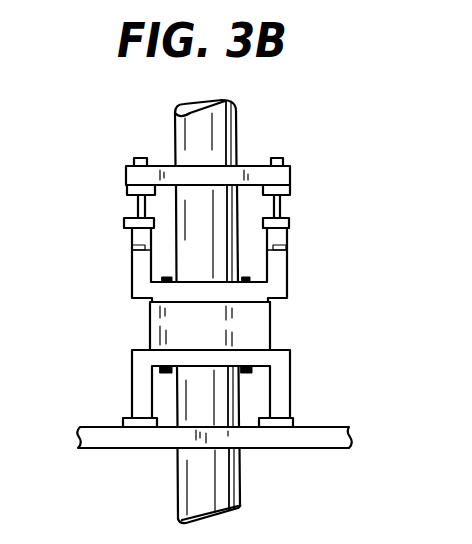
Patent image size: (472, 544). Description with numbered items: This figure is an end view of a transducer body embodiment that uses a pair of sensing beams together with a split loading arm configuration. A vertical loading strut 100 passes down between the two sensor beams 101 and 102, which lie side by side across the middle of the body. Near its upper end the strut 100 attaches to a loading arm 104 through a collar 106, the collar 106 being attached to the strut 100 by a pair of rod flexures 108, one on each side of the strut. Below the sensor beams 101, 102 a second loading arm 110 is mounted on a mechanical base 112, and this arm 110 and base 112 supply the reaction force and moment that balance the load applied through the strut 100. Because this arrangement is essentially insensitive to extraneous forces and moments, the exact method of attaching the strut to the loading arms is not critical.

The loading strut 100 is at (225, 138).
The sensor beam 101 is at (152, 325).
The sensor beam 102 is at (270, 320).
The loading arm 104 is at (137, 269).
The collar 106 is at (273, 177).
The rod flexures 108 is at (134, 206).
The loading arm 110 is at (143, 393).
The mechanical base 112 is at (285, 438).